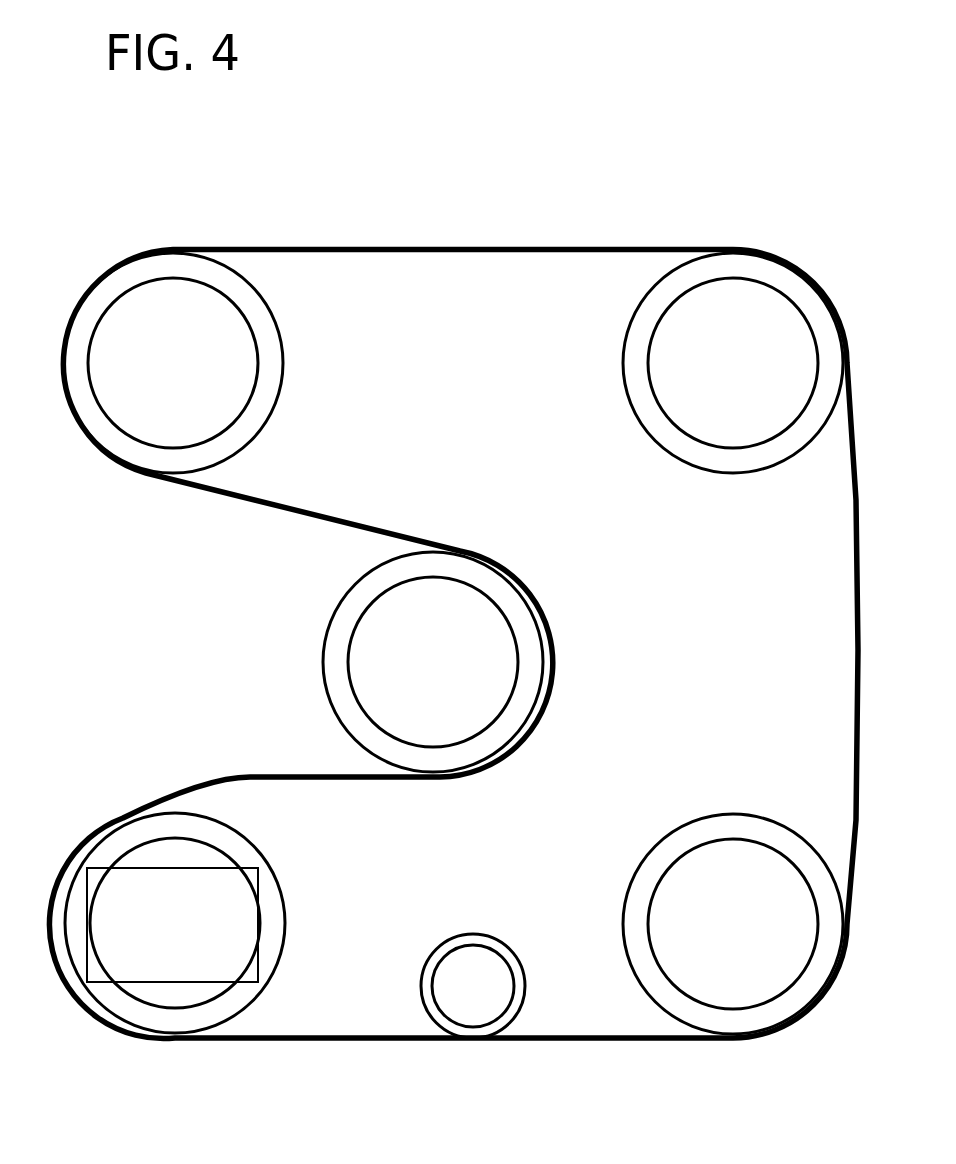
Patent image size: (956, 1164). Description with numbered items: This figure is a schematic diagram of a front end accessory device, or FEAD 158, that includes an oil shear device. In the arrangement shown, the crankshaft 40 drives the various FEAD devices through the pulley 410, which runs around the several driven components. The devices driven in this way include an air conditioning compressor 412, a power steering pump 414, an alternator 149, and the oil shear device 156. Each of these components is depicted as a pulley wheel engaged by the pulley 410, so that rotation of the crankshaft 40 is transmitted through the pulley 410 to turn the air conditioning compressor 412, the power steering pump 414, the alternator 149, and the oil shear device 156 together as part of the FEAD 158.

The front end accessory device (FEAD) 158 is at (623, 112).
The pulley 410 is at (407, 248).
The air conditioning compressor 412 is at (117, 260).
The power steering pump 414 is at (427, 548).
The oil shear device 156 is at (107, 868).
The alternator 149 is at (668, 830).
The crankshaft 40 is at (473, 986).